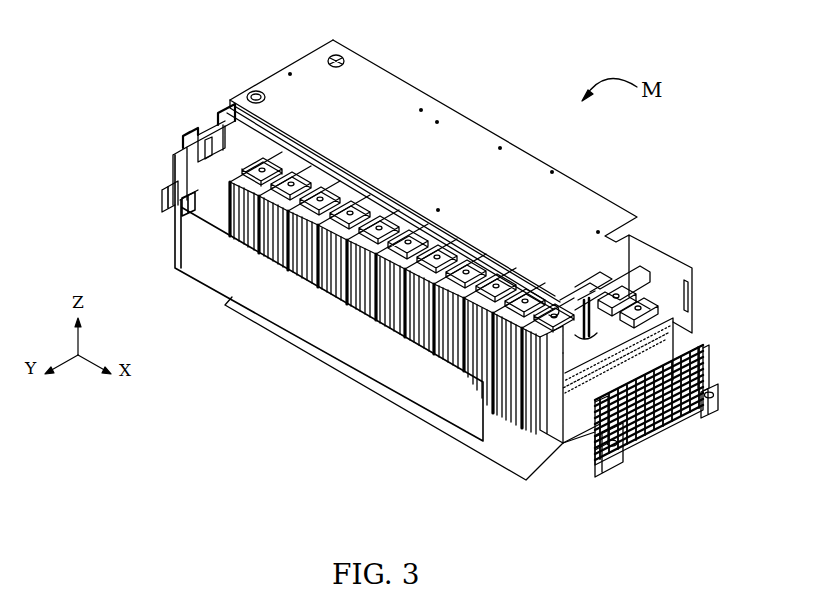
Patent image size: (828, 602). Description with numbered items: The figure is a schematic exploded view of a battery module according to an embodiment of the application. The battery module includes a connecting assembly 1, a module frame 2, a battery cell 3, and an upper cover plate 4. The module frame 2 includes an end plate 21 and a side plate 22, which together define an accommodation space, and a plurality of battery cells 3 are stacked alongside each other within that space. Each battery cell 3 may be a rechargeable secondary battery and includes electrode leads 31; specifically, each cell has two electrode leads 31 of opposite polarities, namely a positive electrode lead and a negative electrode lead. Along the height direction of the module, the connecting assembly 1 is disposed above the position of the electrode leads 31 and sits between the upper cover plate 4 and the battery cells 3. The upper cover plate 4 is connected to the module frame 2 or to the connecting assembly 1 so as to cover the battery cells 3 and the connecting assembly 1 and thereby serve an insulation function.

The connecting assembly 1 is at (230, 101).
The module frame 2 is at (96, 160).
The end plate 21 is at (175, 152).
The side plate 22 is at (186, 243).
The battery cell 3 is at (337, 280).
The electrode lead 31 is at (517, 420).
The upper cover plate 4 is at (399, 87).